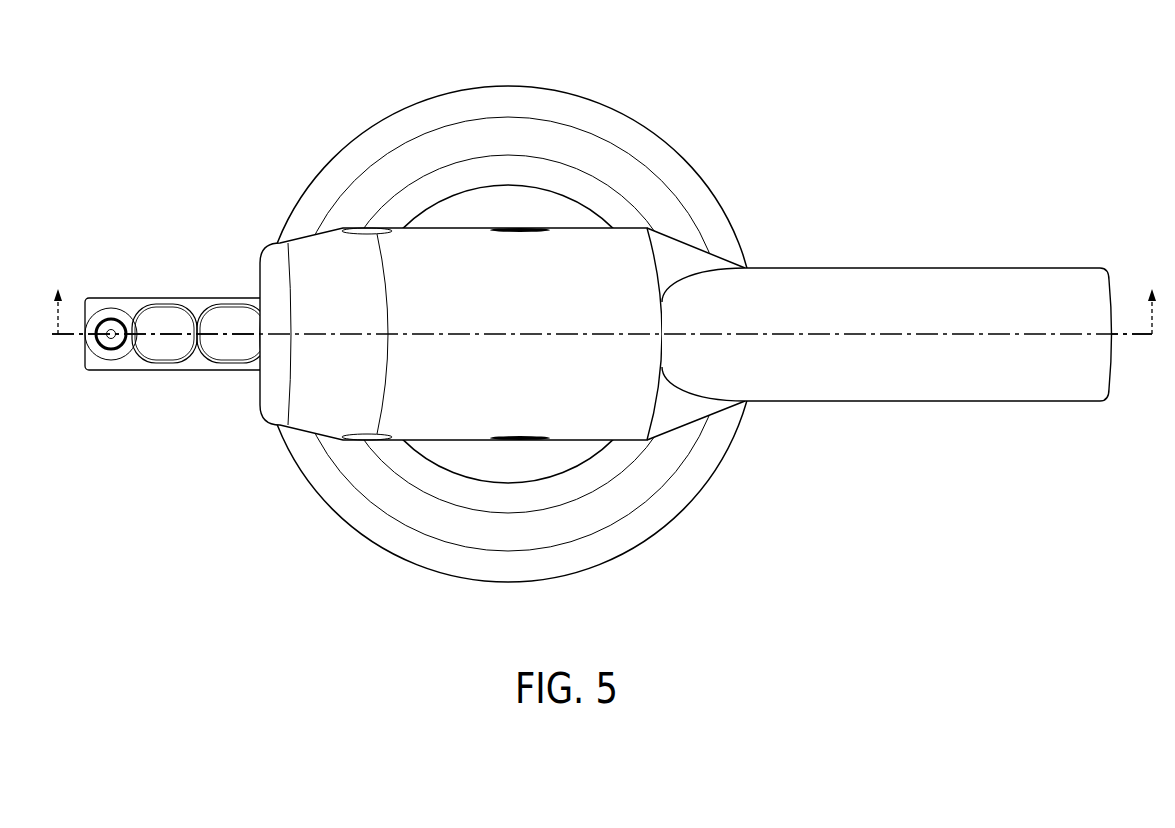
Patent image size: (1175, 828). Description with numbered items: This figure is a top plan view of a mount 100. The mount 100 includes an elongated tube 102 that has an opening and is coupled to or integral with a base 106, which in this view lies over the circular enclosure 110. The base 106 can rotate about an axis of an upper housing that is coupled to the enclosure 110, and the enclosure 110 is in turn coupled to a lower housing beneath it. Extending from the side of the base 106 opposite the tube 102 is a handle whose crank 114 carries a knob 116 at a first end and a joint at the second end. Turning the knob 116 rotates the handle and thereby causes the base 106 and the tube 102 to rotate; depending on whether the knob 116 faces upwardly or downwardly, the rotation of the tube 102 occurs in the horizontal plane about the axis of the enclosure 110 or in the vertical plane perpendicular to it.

The mount 100 is at (845, 113).
The tube 102 is at (1023, 267).
The base 106 is at (303, 232).
The enclosure 110 is at (603, 563).
The crank 114 is at (197, 298).
The knob 116 is at (110, 308).